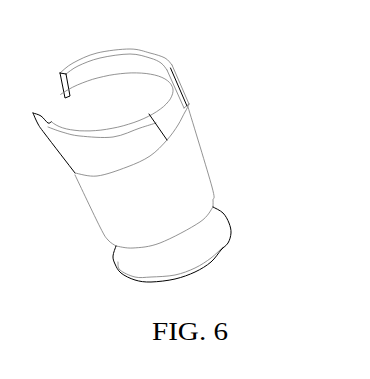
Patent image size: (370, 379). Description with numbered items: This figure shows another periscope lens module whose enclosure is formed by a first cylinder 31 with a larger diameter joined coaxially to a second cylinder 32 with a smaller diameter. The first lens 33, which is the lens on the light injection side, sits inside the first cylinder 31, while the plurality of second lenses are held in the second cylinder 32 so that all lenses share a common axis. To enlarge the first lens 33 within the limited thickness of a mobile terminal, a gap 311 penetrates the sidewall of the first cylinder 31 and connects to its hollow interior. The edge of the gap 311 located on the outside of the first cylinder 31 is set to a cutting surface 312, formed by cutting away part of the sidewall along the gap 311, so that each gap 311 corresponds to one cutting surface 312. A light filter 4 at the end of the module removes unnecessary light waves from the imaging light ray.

The first cylinder 31 is at (153, 50).
The gap 311 is at (190, 108).
The cutting surface 312 is at (183, 88).
The second cylinder 32 is at (190, 177).
The first lens 33 is at (120, 88).
The light filter 4 is at (203, 237).